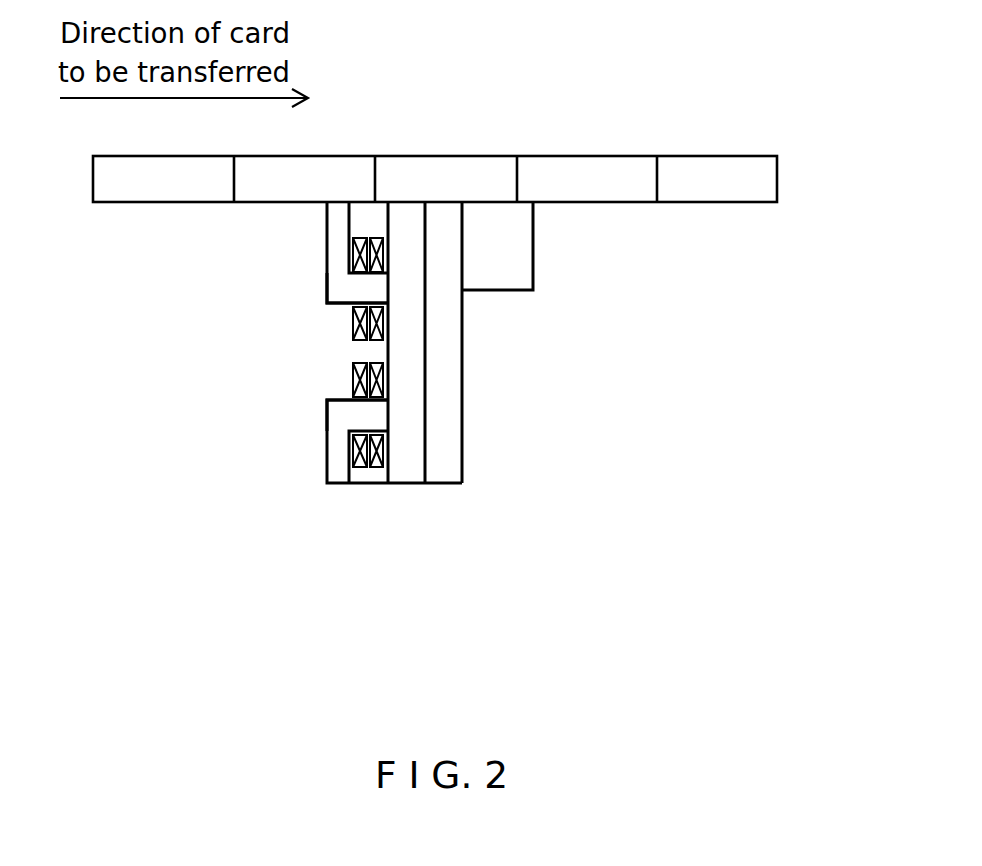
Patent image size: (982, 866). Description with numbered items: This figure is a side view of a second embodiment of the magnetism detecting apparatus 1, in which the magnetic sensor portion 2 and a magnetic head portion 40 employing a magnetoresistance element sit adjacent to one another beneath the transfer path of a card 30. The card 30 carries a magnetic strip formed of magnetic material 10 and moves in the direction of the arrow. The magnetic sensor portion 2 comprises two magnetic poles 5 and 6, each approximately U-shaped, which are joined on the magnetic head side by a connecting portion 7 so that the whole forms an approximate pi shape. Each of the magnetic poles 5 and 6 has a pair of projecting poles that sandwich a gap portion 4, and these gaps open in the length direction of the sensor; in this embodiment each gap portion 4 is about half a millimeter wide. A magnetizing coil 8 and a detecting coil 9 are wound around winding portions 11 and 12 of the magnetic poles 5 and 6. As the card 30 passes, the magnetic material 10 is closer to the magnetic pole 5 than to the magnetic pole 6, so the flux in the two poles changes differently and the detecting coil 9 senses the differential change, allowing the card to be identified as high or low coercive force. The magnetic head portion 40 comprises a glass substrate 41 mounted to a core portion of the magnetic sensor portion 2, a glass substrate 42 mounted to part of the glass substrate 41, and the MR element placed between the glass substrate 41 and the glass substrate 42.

The magnetism detecting apparatus 1 is at (377, 359).
The magnetic sensor portion 2 is at (293, 348).
The gap portion 4 is at (357, 213).
The magnetic pole 5 is at (284, 266).
The magnetic pole 6 is at (333, 447).
The connecting portion 7 is at (410, 345).
The magnetizing coil 8 is at (352, 257).
The detecting coil 9 is at (387, 253).
The magnetic material 10 is at (486, 122).
The winding portion 11 is at (340, 287).
The winding portion 12 is at (360, 418).
The card 30 is at (576, 146).
The magnetic head portion 40 is at (538, 343).
The glass substrate 41 is at (448, 432).
The glass substrate 42 is at (508, 275).